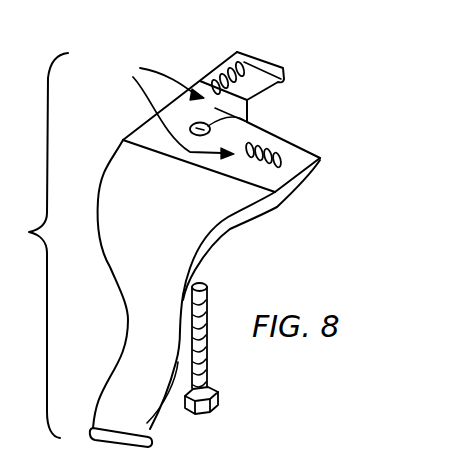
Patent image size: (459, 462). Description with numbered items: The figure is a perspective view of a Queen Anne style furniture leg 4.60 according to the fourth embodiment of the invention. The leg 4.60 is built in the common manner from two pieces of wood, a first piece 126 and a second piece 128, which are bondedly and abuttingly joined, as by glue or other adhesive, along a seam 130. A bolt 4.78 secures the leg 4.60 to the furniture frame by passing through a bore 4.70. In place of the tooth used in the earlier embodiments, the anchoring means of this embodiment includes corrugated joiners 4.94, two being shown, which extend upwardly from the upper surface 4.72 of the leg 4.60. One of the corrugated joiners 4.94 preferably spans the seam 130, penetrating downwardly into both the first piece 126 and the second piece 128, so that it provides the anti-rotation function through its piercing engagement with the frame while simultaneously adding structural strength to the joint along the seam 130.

The seam 130 is at (201, 82).
The second piece 128 is at (252, 70).
The first piece 126 is at (283, 68).
The bore 4.70 is at (248, 123).
The upper surface 4.72 is at (298, 158).
The furniture leg 4.60 is at (208, 214).
The bolt 4.78 is at (207, 360).
The corrugated joiner 4.94 is at (177, 103).